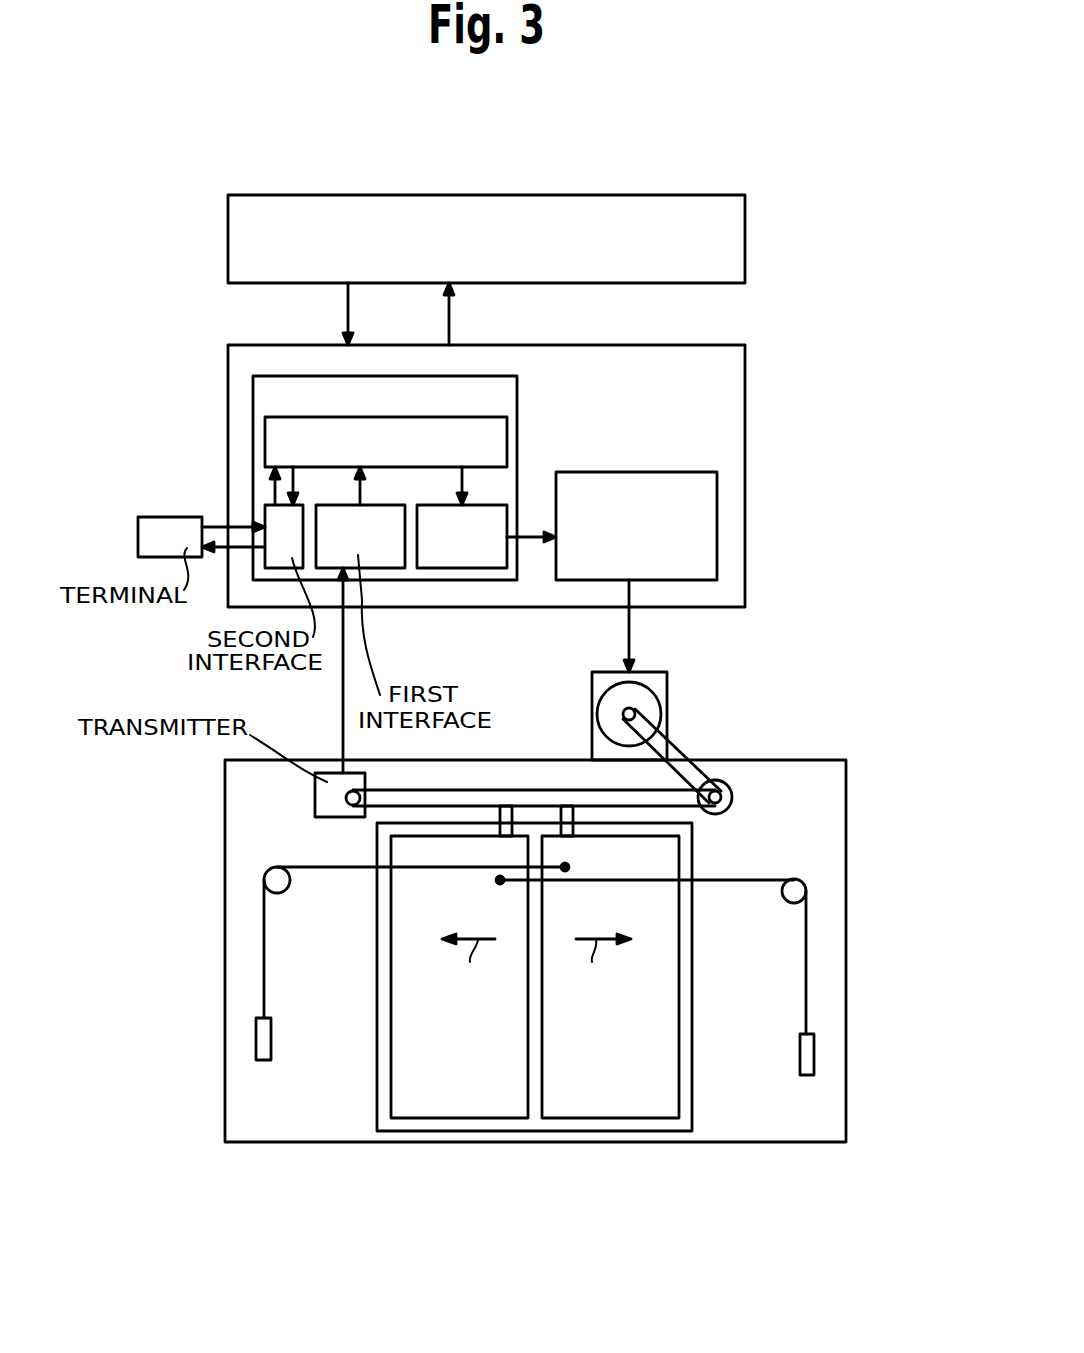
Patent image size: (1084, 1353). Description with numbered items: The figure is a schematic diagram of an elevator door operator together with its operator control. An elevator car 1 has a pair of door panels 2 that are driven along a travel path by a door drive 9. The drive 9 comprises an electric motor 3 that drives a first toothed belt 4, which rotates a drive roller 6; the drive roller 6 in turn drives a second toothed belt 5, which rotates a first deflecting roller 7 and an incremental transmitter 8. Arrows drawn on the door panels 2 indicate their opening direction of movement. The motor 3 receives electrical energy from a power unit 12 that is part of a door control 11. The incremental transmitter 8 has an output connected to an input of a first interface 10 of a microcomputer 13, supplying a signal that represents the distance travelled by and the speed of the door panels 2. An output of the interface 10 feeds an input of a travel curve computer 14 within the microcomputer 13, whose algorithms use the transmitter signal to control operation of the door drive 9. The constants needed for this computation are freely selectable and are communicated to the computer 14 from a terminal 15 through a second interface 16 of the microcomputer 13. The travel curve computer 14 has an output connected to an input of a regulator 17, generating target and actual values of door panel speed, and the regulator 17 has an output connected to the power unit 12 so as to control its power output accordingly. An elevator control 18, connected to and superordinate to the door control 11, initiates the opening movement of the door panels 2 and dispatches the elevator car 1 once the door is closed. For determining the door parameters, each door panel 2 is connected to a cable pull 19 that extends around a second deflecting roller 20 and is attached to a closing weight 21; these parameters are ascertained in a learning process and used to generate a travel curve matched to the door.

The elevator car 1 is at (808, 843).
The door panels 2 is at (470, 1097).
The electric motor 3 is at (668, 680).
The first toothed belt 4 is at (683, 745).
The second toothed belt 5 is at (585, 790).
The drive roller 6 is at (737, 795).
The first deflecting roller 7 is at (345, 800).
The incremental transmitter 8 is at (327, 795).
The door drive 9 is at (797, 739).
The first interface 10 is at (378, 555).
The door control 11 is at (685, 363).
The power unit 12 is at (703, 498).
The microcomputer 13 is at (258, 392).
The travel curve computer 14 is at (270, 443).
The terminal 15 is at (172, 523).
The second interface 16 is at (278, 560).
The regulator 17 is at (467, 562).
The elevator control 18 is at (667, 225).
The cable pull 19 is at (264, 942).
The second deflecting roller 20 is at (267, 875).
The closing weight 21 is at (256, 1040).